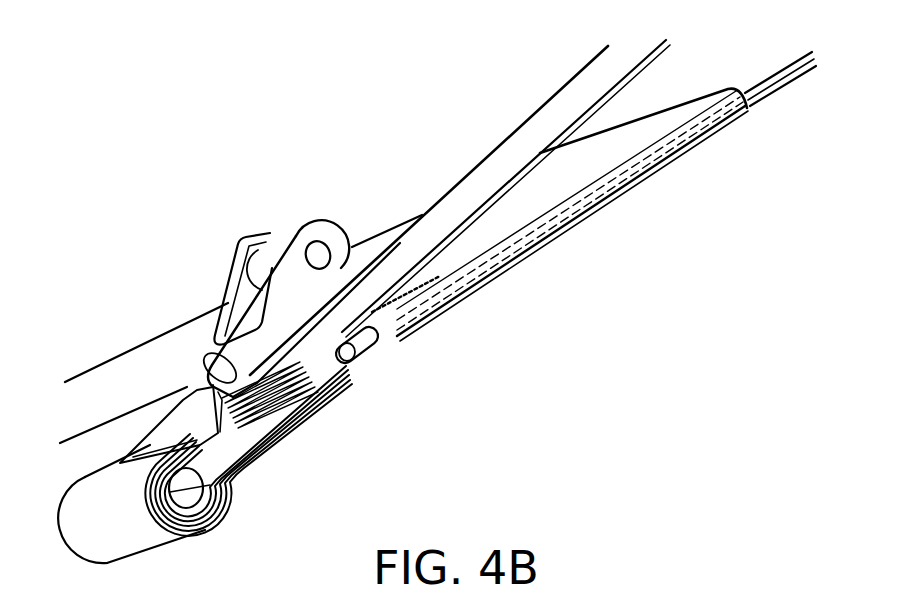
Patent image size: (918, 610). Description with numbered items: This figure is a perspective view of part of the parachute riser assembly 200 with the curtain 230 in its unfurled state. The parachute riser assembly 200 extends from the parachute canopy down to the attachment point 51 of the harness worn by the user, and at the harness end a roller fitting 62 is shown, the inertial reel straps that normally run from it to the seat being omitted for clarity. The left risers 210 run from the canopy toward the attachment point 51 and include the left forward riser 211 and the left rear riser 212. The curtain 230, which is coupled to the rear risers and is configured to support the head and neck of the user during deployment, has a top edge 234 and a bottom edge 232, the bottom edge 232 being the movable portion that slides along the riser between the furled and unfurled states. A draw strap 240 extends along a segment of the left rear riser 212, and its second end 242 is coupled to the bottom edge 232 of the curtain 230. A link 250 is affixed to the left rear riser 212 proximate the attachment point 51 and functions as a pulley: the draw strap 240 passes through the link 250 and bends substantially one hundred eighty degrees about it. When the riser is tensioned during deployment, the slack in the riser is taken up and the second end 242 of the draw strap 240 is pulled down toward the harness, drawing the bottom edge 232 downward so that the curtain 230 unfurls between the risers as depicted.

The parachute riser assembly 200 is at (148, 76).
The left risers 210 is at (655, 348).
The left forward riser 211 is at (537, 112).
The left rear riser 212 is at (773, 103).
The curtain 230 is at (613, 158).
The bottom edge 232 is at (97, 431).
The top edge 234 is at (655, 118).
The draw strap 240 is at (775, 80).
The second end 242 is at (410, 293).
The link 250 is at (360, 360).
The roller fitting 62 is at (237, 300).
The attachment point 51 is at (192, 497).